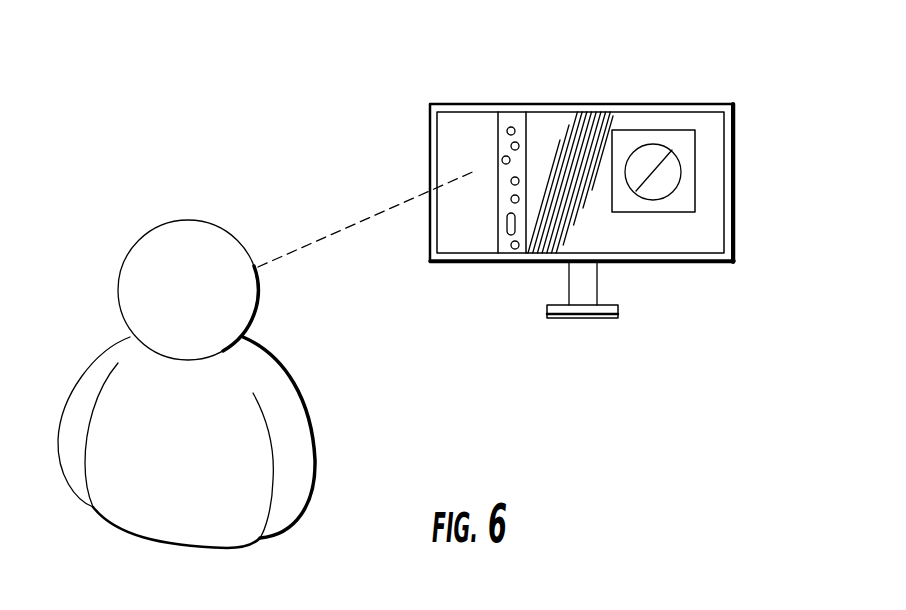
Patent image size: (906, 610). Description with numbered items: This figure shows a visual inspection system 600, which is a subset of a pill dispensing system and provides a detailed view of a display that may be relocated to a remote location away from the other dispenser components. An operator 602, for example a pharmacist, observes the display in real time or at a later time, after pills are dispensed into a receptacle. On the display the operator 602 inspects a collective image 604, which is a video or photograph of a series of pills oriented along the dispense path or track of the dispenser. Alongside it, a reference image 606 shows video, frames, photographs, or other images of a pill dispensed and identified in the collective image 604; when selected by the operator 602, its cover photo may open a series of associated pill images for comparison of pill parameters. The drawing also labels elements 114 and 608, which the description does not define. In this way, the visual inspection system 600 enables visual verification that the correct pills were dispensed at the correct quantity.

The visual inspection system 600 is at (246, 90).
The operator 602 is at (293, 467).
The collective image 604 is at (498, 215).
The hatched region of display 114 is at (592, 106).
The reference image 606 is at (698, 163).
The display device 608 is at (652, 290).